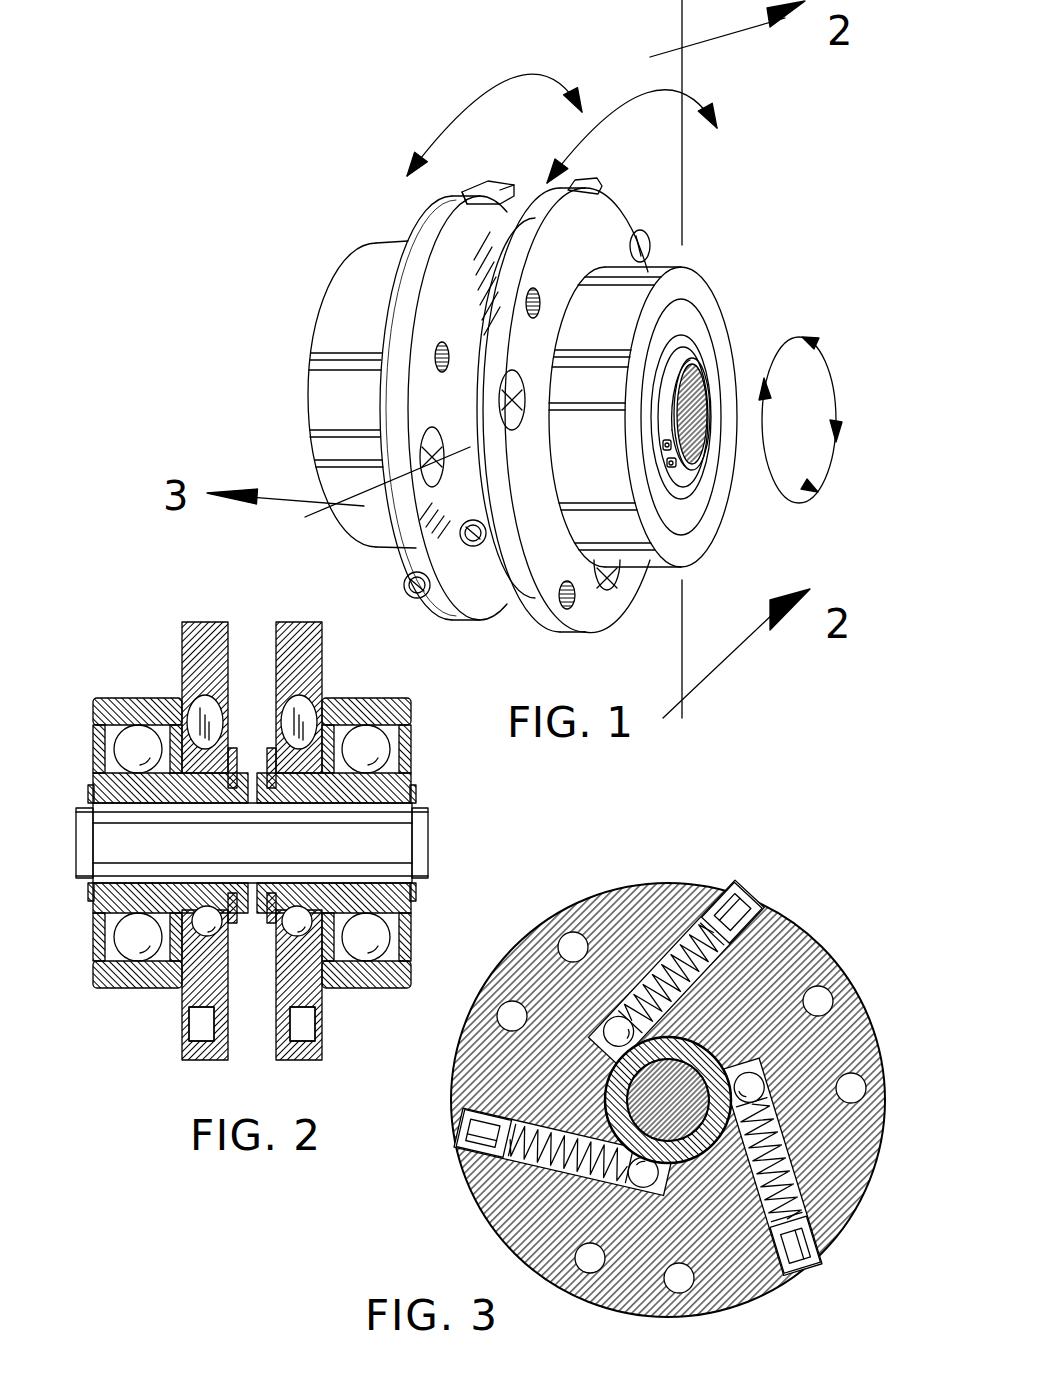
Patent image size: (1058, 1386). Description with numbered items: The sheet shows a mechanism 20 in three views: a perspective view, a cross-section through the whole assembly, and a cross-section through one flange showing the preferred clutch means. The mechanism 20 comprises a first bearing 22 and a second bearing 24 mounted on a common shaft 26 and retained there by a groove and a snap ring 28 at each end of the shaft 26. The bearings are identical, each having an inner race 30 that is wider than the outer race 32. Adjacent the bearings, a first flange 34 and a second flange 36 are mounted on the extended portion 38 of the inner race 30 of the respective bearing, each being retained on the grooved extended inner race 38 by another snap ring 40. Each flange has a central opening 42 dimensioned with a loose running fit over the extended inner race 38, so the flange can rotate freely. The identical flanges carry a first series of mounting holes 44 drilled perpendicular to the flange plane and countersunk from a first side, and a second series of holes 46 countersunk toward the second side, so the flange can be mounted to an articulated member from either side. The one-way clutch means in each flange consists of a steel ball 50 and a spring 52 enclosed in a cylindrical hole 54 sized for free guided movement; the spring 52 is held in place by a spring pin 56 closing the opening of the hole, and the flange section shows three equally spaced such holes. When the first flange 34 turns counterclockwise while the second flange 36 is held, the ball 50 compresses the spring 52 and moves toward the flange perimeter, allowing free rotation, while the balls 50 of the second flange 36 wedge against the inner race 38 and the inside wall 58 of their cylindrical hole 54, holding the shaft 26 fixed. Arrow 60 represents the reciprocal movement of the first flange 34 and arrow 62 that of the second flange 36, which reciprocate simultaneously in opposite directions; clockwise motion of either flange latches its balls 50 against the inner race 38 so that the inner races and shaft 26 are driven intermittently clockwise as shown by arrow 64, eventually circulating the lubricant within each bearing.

In FIG. 1, the mechanism 20 is at (246, 206).
In FIG. 1, the first bearing 22 is at (711, 282).
In FIG. 2, the first bearing 22 is at (432, 690).
In FIG. 1, the second bearing 24 is at (323, 331).
In FIG. 2, the second bearing 24 is at (92, 655).
In FIG. 1, the common shaft 26 is at (707, 389).
In FIG. 2, the common shaft 26 is at (432, 834).
In FIG. 3, the common shaft 26 is at (628, 1110).
In FIG. 1, the snap ring 28 is at (683, 480).
In FIG. 2, the snap ring 28 is at (418, 887).
In FIG. 2, the inner race 30 is at (411, 776).
In FIG. 2, the outer race 32 is at (355, 698).
In FIG. 1, the first flange 34 is at (648, 214).
In FIG. 2, the first flange 34 is at (297, 613).
In FIG. 3, the first flange 34 is at (822, 942).
In FIG. 1, the second flange 36 is at (440, 225).
In FIG. 2, the second flange 36 is at (190, 618).
In FIG. 2, the extended portion of the inner race 38 is at (307, 790).
In FIG. 3, the extended portion of the inner race 38 is at (593, 1085).
In FIG. 1, the snap ring 40 is at (487, 283).
In FIG. 2, the snap ring 40 is at (273, 753).
In FIG. 3, the central opening 42 is at (693, 1027).
In FIG. 1, the mounting holes 44 is at (520, 412).
In FIG. 2, the mounting holes 44 is at (182, 1022).
In FIG. 3, the mounting holes 44 is at (505, 1003).
In FIG. 1, the holes 46 is at (540, 300).
In FIG. 2, the holes 46 is at (322, 1020).
In FIG. 3, the holes 46 is at (577, 932).
In FIG. 2, the steel ball 50 is at (290, 932).
In FIG. 3, the steel ball 50 is at (615, 1025).
In FIG. 3, the spring 52 is at (698, 940).
In FIG. 2, the cylindrical hole 54 is at (193, 715).
In FIG. 3, the cylindrical hole 54 is at (672, 940).
In FIG. 1, the spring pin 56 is at (403, 587).
In FIG. 3, the spring pin 56 is at (748, 890).
In FIG. 3, the inside wall 58 is at (598, 1040).
In FIG. 1, the arrow 60 is at (647, 93).
In FIG. 1, the arrow 62 is at (492, 80).
In FIG. 1, the arrow 64 is at (840, 375).